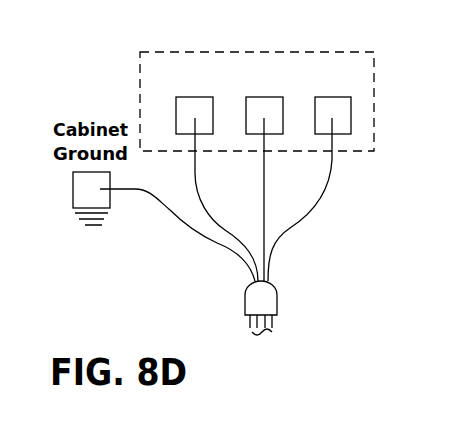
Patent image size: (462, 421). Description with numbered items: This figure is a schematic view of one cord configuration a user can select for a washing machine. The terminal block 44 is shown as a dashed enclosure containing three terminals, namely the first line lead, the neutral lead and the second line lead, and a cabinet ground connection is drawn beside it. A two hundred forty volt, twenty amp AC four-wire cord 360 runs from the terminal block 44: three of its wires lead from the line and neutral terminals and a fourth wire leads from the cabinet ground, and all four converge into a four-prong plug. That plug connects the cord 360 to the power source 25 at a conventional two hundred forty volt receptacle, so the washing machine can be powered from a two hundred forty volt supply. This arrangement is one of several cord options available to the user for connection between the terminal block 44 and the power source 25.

The terminal block 44 is at (375, 85).
The 240V 20 amp AC four-wire cord 360 is at (312, 223).
The power source 25 is at (263, 338).